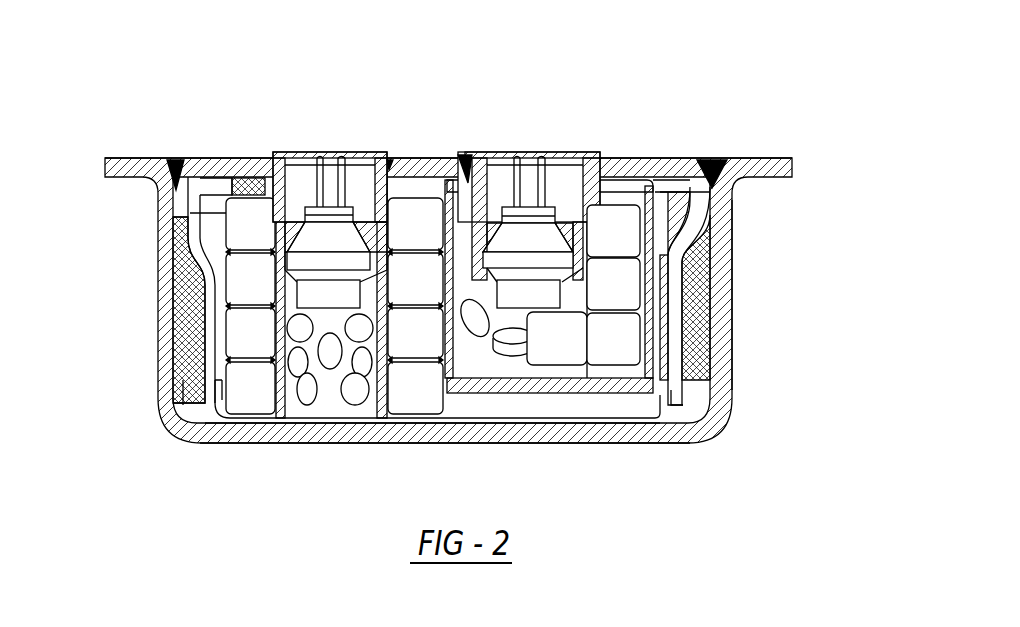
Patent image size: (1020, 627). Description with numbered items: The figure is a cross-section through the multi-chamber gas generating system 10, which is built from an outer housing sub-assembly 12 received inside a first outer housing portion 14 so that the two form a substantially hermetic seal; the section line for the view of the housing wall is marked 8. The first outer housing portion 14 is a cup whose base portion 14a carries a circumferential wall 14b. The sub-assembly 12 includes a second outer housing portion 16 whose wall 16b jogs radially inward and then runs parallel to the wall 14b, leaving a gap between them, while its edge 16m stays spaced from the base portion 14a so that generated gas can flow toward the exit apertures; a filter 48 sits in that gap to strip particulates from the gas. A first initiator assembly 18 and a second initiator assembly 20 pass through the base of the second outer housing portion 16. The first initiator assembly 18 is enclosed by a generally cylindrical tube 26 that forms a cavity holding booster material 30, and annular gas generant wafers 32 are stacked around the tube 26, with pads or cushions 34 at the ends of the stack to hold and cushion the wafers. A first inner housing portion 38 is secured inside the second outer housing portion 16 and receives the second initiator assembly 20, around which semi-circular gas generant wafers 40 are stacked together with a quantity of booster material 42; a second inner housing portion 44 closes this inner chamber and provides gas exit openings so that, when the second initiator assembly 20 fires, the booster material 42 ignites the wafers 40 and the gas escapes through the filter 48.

The multi-chamber gas generating system 10 is at (75, 405).
The outer housing sub-assembly 12 is at (660, 150).
The first outer housing portion 14 is at (736, 349).
The base portion 14a is at (630, 432).
The wall 14b is at (718, 322).
The second outer housing portion 16 is at (682, 158).
The wall 16b is at (203, 305).
The edge 16m is at (203, 380).
The first initiator assembly 18 is at (358, 167).
The second initiator assembly 20 is at (560, 177).
The tube 26 is at (282, 415).
The booster material 30 is at (298, 400).
The gas generant wafers 32 is at (232, 222).
The pads or cushions 34 is at (250, 180).
The first inner housing portion 38 is at (658, 257).
The gas generant wafers 40 is at (620, 288).
The booster material 42 is at (510, 342).
The second inner housing portion 44 is at (568, 400).
The filter 48 is at (183, 405).
The section line 8 is at (82, 262).